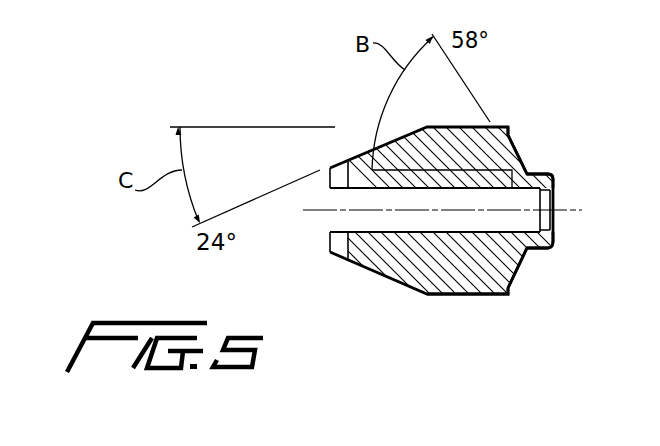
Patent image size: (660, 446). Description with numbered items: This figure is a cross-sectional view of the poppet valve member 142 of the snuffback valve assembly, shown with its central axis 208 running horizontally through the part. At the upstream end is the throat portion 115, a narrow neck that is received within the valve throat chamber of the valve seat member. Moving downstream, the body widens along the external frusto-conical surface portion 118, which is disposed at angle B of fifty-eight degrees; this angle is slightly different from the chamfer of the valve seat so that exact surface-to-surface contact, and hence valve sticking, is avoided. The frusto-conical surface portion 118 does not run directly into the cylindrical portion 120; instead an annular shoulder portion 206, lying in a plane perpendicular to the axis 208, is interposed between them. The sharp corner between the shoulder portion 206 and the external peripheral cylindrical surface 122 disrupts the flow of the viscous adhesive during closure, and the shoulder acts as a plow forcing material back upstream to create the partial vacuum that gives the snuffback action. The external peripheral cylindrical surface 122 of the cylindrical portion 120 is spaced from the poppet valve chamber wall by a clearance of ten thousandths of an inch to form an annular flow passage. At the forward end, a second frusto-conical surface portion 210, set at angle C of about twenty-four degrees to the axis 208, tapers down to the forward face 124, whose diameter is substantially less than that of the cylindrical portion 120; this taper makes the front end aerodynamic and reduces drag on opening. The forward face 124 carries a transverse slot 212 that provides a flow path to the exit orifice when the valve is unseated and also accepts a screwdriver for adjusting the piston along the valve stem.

The cylindrical portion 120 is at (447, 147).
The external peripheral cylindrical surface 122 is at (440, 296).
The forward face 124 is at (327, 230).
The transverse slot 212 is at (340, 250).
The second frusto-conical surface portion 210 is at (373, 170).
The annular shoulder portion 206 is at (508, 138).
The upstream throat portion 115 is at (543, 173).
The axis 208 is at (570, 212).
The external frusto-conical surface portion 118 is at (515, 267).
The poppet valve member 142 is at (507, 308).